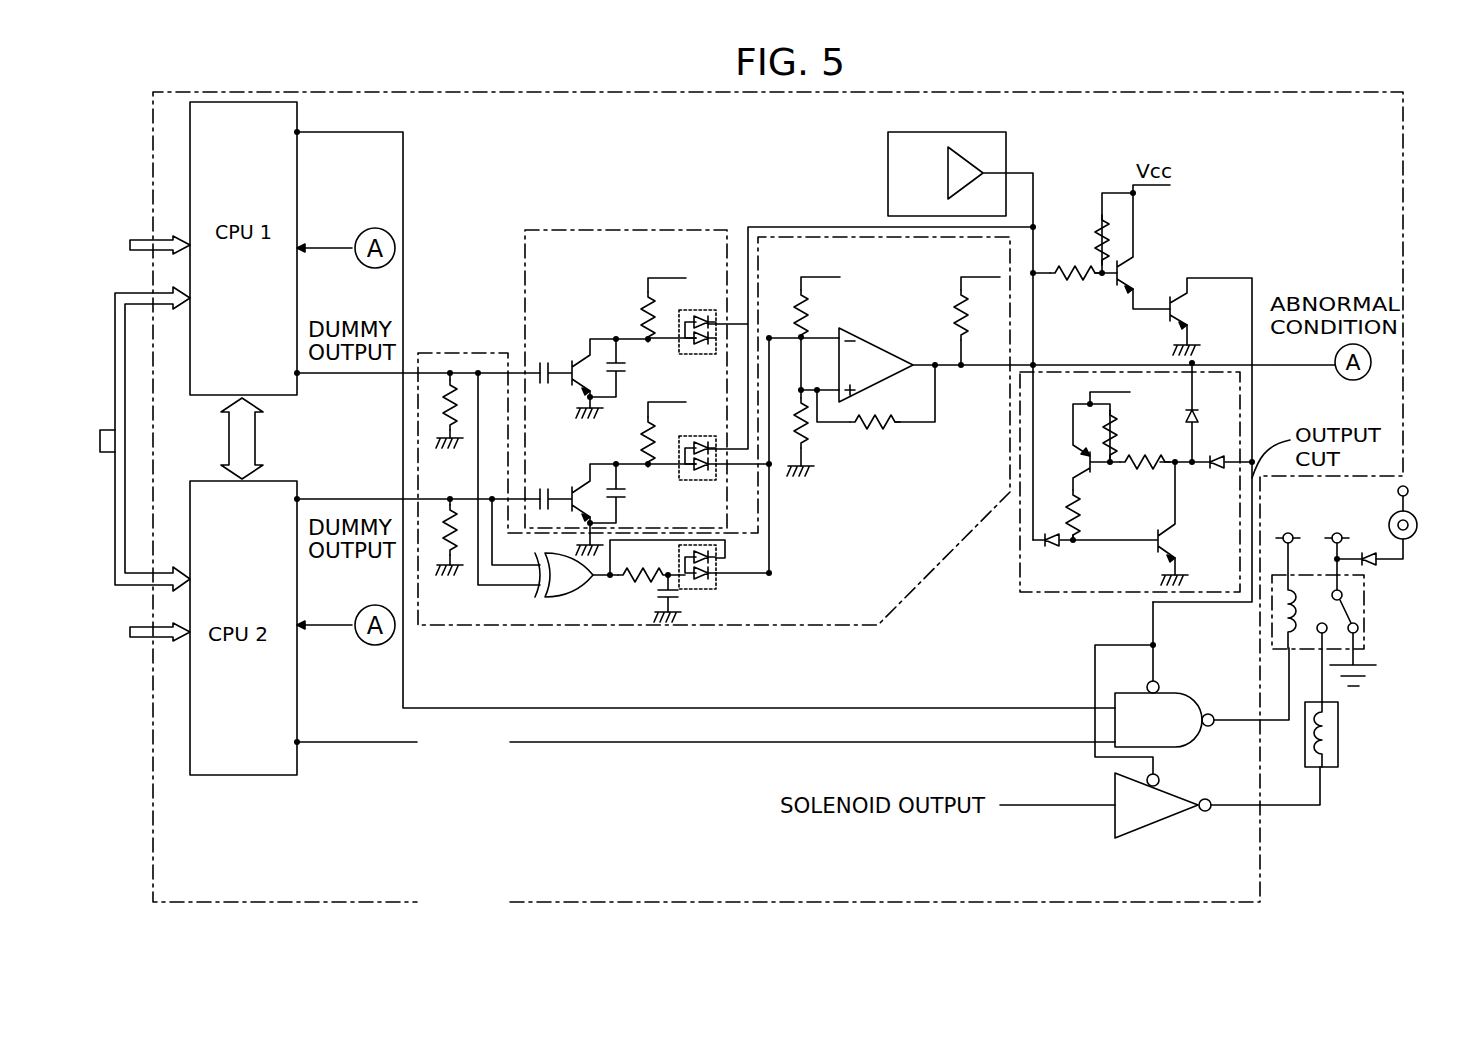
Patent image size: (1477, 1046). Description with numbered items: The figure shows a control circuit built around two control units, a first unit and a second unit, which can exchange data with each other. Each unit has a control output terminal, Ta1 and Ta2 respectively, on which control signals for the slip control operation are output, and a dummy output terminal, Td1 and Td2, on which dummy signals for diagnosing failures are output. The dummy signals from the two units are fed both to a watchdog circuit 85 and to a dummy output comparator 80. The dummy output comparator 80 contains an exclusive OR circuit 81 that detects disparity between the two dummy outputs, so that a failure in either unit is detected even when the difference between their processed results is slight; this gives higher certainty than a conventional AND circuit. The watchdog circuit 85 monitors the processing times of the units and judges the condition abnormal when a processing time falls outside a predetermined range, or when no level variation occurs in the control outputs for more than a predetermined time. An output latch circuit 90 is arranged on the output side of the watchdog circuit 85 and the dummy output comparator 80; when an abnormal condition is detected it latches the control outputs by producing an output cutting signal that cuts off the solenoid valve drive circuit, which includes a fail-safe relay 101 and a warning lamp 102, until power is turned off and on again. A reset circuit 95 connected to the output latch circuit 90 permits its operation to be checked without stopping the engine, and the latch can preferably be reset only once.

The dummy output comparator 80 is at (457, 630).
The exclusive OR circuit 81 is at (567, 592).
The watchdog circuit 85 is at (558, 230).
The output latch circuit 90 is at (1012, 551).
The reset circuit 95 is at (1006, 133).
The fail-safe relay 101 is at (1366, 622).
The warning lamp 102 is at (1417, 528).
The control output terminal Ta1 is at (297, 133).
The control output terminal Ta2 is at (297, 743).
The dummy output terminal Td1 is at (297, 374).
The dummy output terminal Td2 is at (297, 498).